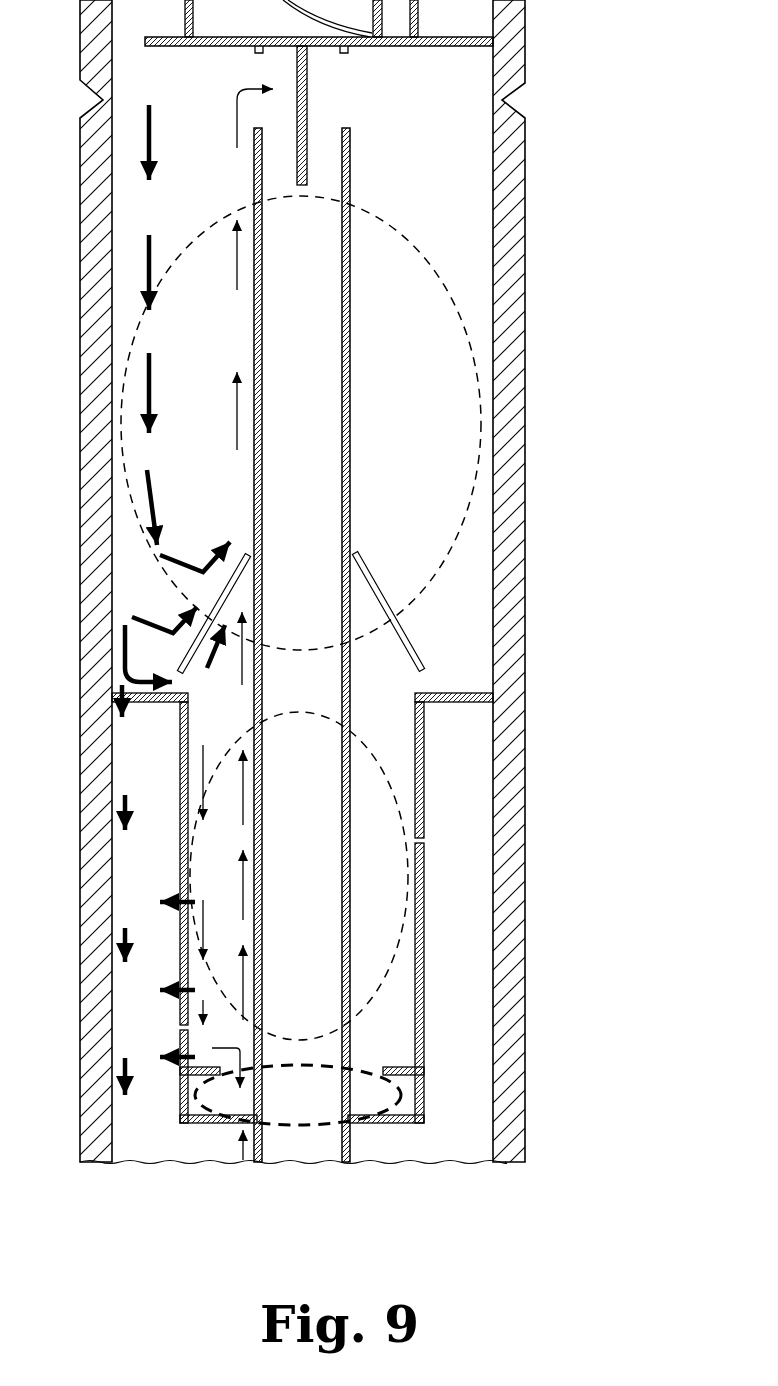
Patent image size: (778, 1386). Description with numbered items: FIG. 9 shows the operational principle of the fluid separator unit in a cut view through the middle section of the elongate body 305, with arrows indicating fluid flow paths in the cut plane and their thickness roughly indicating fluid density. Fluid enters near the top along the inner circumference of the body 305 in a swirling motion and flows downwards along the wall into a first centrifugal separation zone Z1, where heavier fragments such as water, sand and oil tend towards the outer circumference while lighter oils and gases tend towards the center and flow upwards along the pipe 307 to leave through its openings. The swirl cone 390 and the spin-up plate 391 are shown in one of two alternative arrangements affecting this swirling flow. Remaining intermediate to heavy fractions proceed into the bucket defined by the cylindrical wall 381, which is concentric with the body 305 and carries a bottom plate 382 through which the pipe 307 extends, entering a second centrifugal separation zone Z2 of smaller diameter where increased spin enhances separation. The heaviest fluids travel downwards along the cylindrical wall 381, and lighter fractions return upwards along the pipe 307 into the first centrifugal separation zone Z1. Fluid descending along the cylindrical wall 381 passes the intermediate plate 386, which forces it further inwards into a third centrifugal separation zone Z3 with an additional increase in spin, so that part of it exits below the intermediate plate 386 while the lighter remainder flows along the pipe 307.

The elongate body 305 is at (528, 207).
The pipe 307 is at (350, 388).
The swirl cone 390 is at (367, 570).
The spin-up plate 391 is at (462, 692).
The cylindrical wall 381 is at (425, 803).
The intermediate plate 386 is at (397, 1067).
The bottom plate 382 is at (383, 1125).
The first centrifugal separation zone Z1 is at (463, 327).
The second centrifugal separation zone Z2 is at (423, 948).
The third centrifugal separation zone Z3 is at (393, 1108).